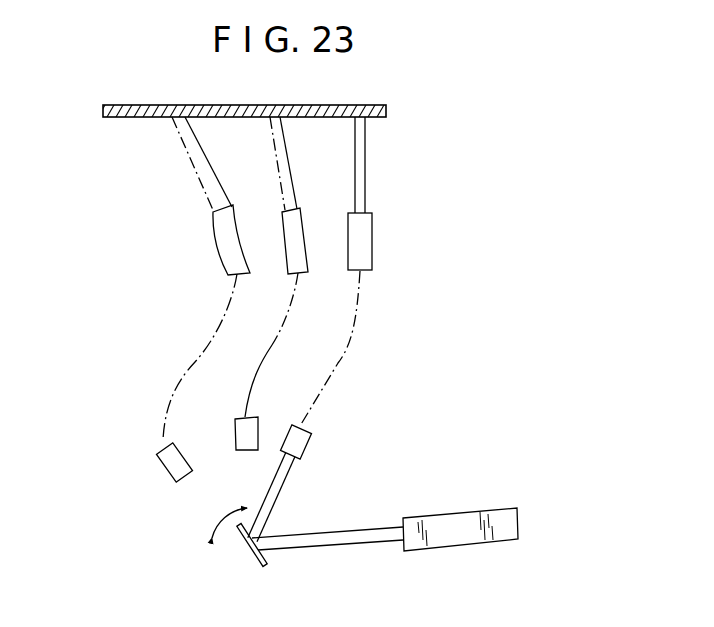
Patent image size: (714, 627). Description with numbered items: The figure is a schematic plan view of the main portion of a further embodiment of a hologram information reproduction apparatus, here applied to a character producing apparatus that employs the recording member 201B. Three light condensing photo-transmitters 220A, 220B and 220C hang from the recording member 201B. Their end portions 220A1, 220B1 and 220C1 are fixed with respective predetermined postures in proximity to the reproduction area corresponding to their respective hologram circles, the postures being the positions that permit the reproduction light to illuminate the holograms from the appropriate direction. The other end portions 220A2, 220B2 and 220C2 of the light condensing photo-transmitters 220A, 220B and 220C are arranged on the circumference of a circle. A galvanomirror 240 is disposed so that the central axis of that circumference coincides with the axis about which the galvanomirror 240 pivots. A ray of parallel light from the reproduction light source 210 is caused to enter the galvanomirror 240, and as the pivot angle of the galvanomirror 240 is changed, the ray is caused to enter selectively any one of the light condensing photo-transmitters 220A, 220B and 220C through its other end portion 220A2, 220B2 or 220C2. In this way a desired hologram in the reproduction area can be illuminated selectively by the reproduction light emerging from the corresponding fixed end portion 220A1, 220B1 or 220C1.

The recording member 201B is at (352, 105).
The reproduction light source 210 is at (458, 518).
The light condensing photo-transmitter 220A is at (343, 351).
The end portion of light condensing photo-transmitter 220A1 is at (373, 238).
The other end portion of light condensing photo-transmitter 220A2 is at (313, 441).
The light condensing photo-transmitter 220B is at (261, 361).
The end portion of light condensing photo-transmitter 220B1 is at (282, 217).
The other end portion of light condensing photo-transmitter 220B2 is at (235, 438).
The light condensing photo-transmitter 220C is at (200, 352).
The end portion of light condensing photo-transmitter 220C1 is at (228, 240).
The other end portion of light condensing photo-transmitter 220C2 is at (170, 477).
The galvanomirror 240 is at (253, 558).